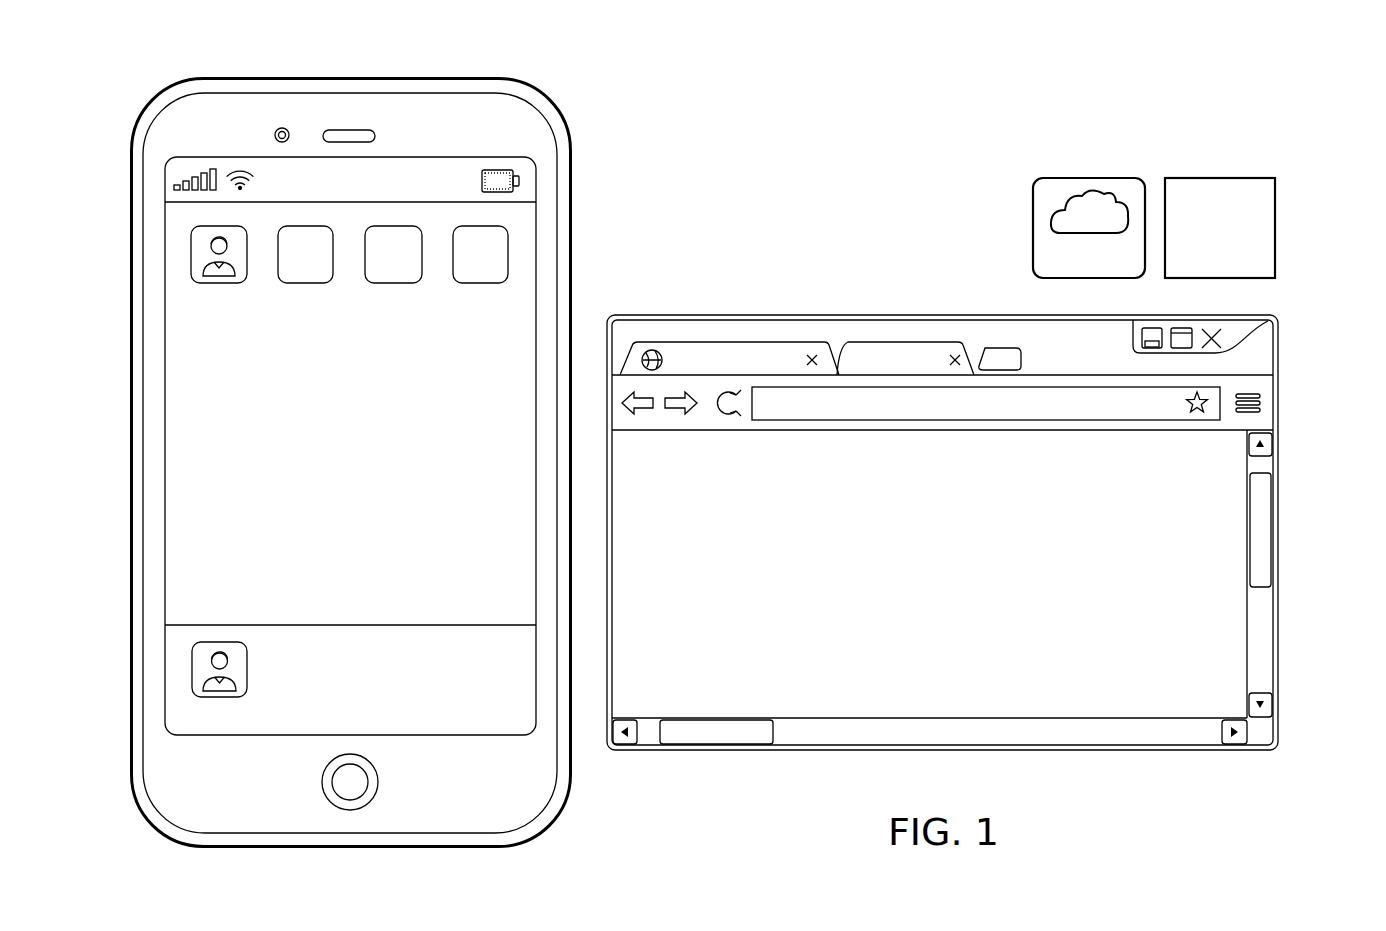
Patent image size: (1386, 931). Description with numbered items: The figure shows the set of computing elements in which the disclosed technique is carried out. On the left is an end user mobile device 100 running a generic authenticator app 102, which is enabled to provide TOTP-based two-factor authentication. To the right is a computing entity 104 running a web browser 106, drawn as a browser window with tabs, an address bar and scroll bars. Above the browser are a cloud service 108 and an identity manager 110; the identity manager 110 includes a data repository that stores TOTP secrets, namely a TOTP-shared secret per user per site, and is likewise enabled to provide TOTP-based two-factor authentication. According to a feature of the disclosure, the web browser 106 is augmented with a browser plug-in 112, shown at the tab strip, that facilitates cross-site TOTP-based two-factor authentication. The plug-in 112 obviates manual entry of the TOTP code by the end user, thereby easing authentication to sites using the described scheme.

The end user mobile device 100 is at (281, 74).
The generic authenticator app 102 is at (247, 668).
The computing entity 104 is at (834, 310).
The web browser 106 is at (730, 342).
The cloud service 108 is at (1033, 228).
The identity manager 110 is at (1275, 228).
The browser plug-in 112 is at (1038, 357).